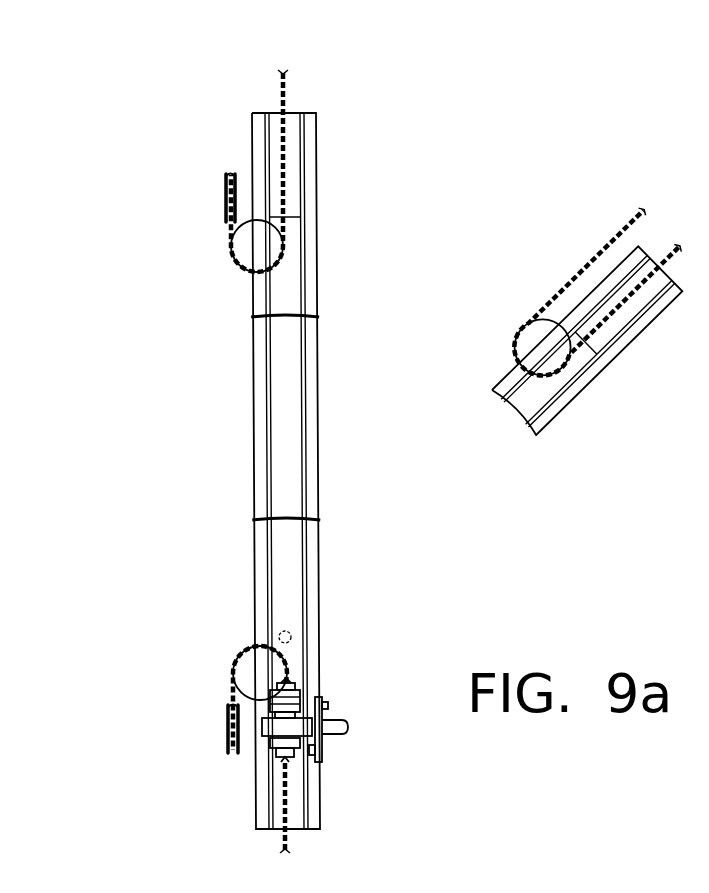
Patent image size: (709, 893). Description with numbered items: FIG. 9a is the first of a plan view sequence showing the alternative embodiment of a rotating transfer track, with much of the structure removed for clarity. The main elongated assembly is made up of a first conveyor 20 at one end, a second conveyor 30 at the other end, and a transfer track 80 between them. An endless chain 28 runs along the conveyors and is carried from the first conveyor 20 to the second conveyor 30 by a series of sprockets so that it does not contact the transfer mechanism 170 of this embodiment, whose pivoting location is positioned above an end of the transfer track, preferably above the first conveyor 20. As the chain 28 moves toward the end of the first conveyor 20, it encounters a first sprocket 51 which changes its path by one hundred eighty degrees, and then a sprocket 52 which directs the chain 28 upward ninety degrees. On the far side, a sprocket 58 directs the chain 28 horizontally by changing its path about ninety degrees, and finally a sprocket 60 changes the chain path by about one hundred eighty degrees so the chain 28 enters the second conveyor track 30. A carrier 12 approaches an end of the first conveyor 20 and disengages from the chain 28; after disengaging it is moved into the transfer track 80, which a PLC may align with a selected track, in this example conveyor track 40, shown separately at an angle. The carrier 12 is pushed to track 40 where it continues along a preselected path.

The carrier 12 is at (347, 728).
The first conveyor 20 is at (262, 813).
The endless chain 28 is at (288, 101).
The second conveyor 30 is at (254, 145).
The conveyor track 40 is at (610, 355).
The first sprocket 51 is at (245, 672).
The sprocket 52 is at (228, 735).
The sprocket 58 is at (225, 200).
The sprocket 60 is at (247, 265).
The transfer track 80 is at (258, 473).
The transfer mechanism 170 is at (578, 276).